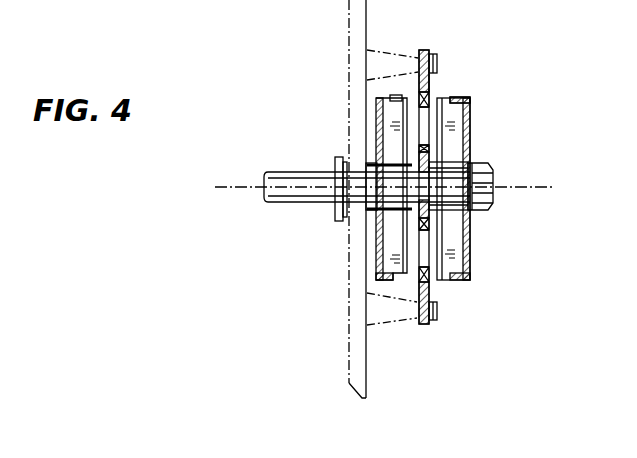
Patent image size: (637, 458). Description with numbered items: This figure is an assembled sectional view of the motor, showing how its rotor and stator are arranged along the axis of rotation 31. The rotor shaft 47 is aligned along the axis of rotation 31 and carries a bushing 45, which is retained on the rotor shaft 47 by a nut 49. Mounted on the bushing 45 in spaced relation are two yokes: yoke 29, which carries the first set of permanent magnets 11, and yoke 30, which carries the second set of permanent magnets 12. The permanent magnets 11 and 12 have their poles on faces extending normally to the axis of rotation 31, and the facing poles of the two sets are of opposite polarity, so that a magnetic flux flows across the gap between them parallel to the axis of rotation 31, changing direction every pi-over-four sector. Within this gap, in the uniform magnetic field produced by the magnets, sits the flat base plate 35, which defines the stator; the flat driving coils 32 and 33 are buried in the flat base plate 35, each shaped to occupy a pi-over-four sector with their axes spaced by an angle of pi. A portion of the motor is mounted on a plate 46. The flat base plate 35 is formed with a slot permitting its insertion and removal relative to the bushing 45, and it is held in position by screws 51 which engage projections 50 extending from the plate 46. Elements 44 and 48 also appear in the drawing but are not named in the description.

The first set of permanent magnets 11 is at (401, 124).
The second set of permanent magnets 12 is at (457, 127).
The yoke 29 is at (393, 96).
The yoke 30 is at (460, 96).
The axis of rotation 31 is at (222, 186).
The driving coil 32 is at (430, 147).
The driving coil 33 is at (430, 280).
The flat base plate 35 is at (429, 87).
The pin 44 is at (428, 54).
The bushing 45 is at (369, 211).
The plate 46 is at (351, 312).
The rotor shaft 47 is at (289, 203).
The collar 48 is at (340, 156).
The nut 49 is at (486, 174).
The projections 50 is at (389, 54).
The screws 51 is at (436, 62).